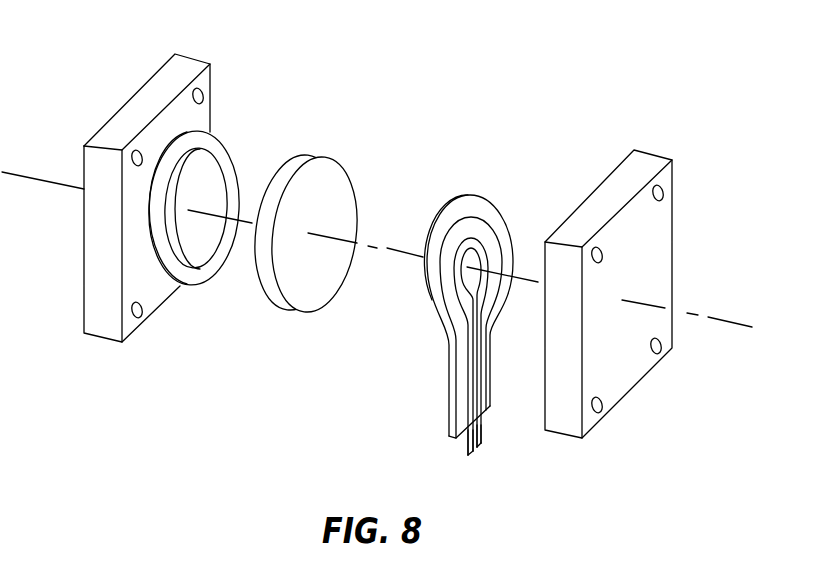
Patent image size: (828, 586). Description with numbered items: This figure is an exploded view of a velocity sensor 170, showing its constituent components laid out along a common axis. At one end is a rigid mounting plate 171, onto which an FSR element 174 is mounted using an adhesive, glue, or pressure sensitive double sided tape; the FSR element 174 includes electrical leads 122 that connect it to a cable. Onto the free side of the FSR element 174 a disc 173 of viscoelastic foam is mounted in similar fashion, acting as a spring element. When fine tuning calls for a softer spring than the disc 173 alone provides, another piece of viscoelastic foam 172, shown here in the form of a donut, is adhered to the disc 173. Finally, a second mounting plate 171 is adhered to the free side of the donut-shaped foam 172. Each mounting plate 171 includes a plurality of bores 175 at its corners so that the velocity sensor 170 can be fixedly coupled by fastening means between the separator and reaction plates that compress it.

The velocity sensor 170 is at (380, 256).
The mounting plate 171 is at (183, 70).
The donut-shaped viscoelastic foam piece 172 is at (220, 152).
The disc of viscoelastic foam 173 is at (328, 183).
The FSR element 174 is at (480, 205).
The bores 175 is at (152, 316).
The electrical leads 122 is at (470, 457).